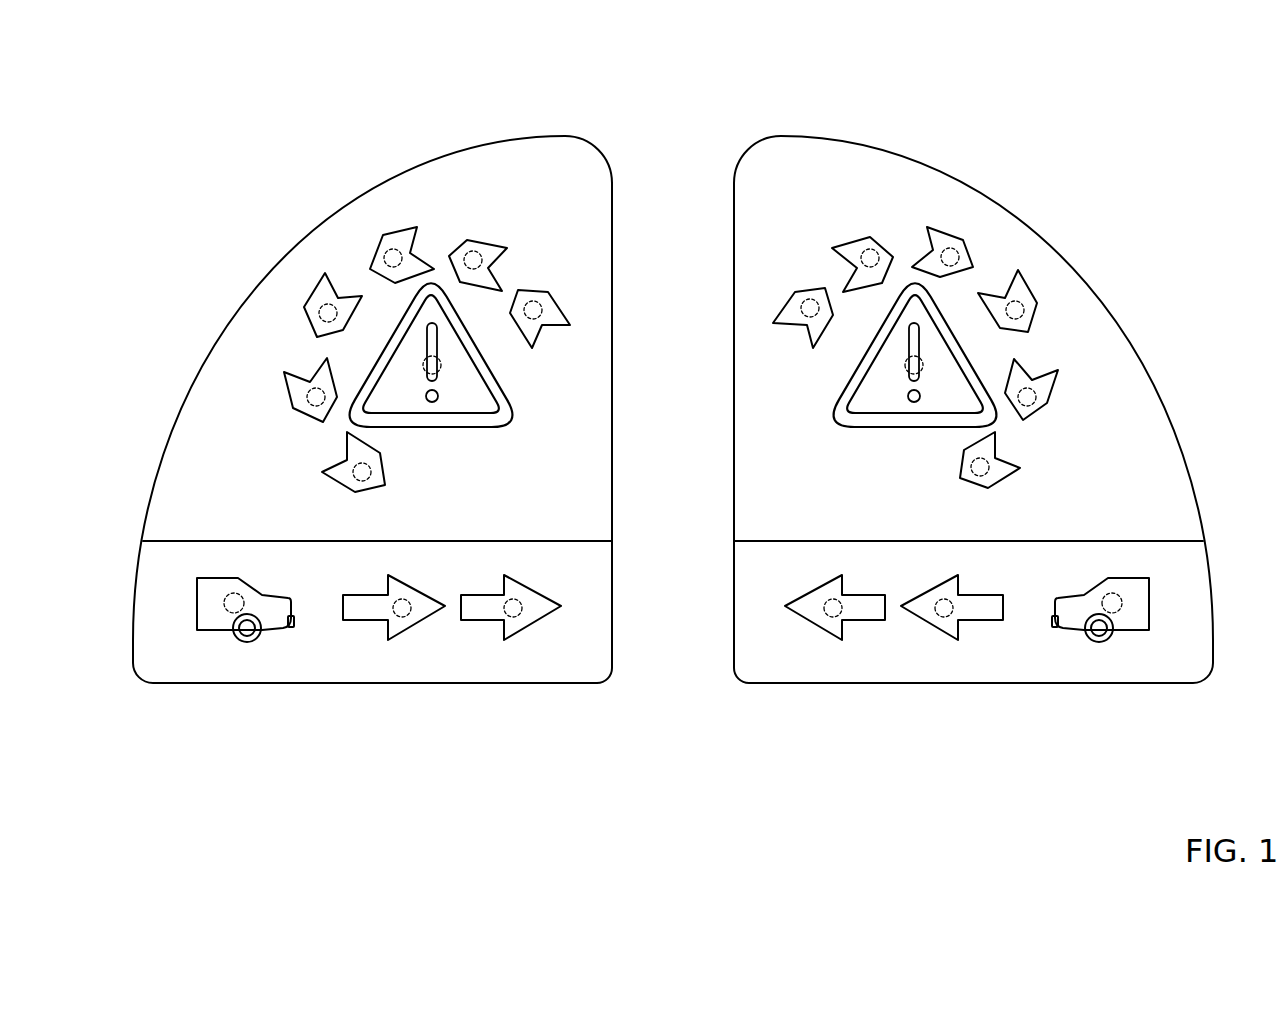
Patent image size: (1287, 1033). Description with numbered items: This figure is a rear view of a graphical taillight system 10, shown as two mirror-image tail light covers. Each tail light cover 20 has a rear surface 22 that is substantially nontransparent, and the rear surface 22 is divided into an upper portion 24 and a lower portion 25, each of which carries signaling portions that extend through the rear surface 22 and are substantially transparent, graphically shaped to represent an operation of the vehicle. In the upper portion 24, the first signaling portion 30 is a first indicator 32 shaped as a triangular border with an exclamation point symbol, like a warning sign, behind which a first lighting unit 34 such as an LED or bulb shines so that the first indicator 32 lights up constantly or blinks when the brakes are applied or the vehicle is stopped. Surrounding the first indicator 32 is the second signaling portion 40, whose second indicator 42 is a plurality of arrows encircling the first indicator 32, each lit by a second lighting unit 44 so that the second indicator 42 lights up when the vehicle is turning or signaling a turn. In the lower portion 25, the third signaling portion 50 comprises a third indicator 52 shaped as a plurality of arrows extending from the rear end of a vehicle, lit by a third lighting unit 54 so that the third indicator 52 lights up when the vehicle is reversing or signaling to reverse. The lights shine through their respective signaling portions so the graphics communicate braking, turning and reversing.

The graphical taillight system 10 is at (200, 131).
The tail light cover 20 is at (475, 167).
The rear surface 22 is at (596, 186).
The upper portion 24 is at (592, 432).
The lower portion 25 is at (600, 622).
The first signaling portion 30 is at (730, 347).
The first indicator 32 is at (506, 402).
The first lighting unit 34 is at (441, 365).
The second signaling portion 40 is at (283, 297).
The second indicator 42 is at (387, 237).
The second lighting unit 44 is at (473, 252).
The third signaling portion 50 is at (650, 676).
The third indicator 52 is at (213, 615).
The third lighting unit 54 is at (392, 617).